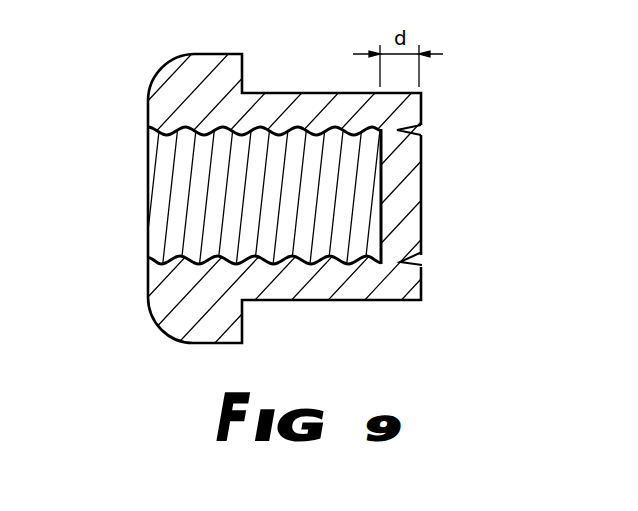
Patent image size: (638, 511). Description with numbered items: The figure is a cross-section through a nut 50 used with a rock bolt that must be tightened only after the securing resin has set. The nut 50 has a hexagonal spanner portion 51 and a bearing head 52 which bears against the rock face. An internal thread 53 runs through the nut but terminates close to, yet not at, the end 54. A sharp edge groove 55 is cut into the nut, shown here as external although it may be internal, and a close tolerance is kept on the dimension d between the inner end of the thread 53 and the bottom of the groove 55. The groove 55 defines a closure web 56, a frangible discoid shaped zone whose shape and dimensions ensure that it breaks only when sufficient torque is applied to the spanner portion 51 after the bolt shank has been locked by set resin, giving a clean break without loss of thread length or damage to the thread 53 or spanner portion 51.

The nut 50 is at (282, 72).
The hexagonal spanner portion 51 is at (323, 300).
The bearing head 52 is at (190, 305).
The internal thread 53 is at (208, 192).
The end 54 is at (421, 106).
The sharp edge groove 55 is at (400, 262).
The closure web 56 is at (408, 193).